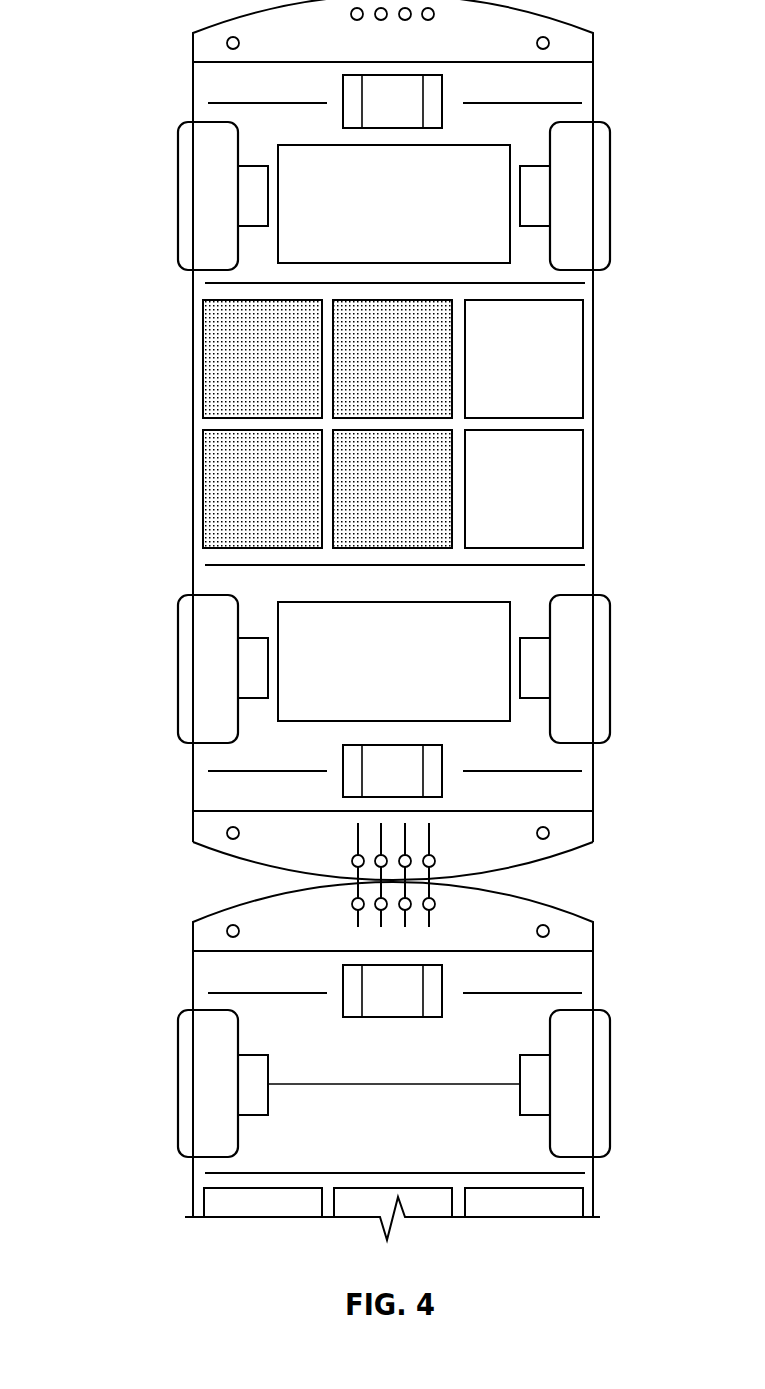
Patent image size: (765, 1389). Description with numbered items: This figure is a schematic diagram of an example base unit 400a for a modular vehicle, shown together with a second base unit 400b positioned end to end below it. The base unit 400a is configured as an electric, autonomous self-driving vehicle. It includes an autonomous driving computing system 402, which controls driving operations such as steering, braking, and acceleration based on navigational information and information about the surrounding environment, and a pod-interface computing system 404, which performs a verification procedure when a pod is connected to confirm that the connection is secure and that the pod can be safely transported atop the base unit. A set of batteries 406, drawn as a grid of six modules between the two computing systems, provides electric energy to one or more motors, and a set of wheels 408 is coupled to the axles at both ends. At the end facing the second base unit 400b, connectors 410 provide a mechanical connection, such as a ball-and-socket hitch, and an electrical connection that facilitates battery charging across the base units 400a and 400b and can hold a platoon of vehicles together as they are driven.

The base unit 400a is at (155, 49).
The base unit 400b is at (152, 933).
The autonomous driving computing system 402 is at (500, 256).
The pod-interface computing system 404 is at (500, 711).
The set of batteries 406 is at (193, 303).
The set of wheels 408 is at (178, 195).
The connectors 410 is at (434, 842).